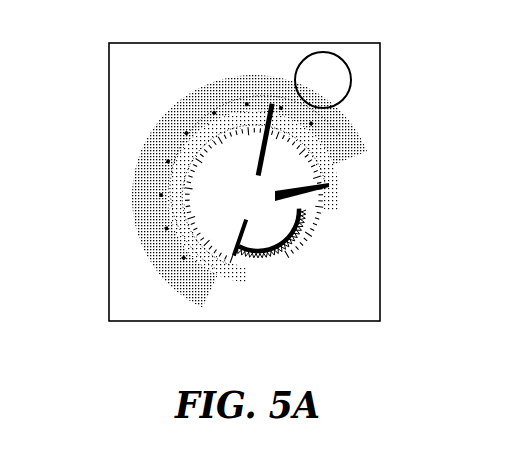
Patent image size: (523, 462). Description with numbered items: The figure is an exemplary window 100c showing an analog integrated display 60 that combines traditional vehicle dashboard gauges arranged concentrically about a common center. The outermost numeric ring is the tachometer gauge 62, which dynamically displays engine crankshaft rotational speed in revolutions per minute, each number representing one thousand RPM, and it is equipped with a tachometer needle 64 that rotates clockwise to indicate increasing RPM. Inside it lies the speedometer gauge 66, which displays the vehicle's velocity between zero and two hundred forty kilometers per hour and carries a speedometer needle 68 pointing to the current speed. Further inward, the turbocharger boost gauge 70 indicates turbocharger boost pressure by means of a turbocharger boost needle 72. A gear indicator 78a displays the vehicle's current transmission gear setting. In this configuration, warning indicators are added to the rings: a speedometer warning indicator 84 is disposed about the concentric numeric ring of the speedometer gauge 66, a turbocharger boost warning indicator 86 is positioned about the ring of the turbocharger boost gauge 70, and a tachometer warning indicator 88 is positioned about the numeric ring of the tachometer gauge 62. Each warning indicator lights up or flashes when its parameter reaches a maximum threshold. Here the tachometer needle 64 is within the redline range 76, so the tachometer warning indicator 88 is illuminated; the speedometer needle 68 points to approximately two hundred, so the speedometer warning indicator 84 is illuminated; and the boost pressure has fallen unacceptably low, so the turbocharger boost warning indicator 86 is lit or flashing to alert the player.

The window 100c is at (122, 349).
The analog integrated display 60 is at (158, 288).
The tachometer gauge 62 is at (158, 144).
The tachometer needle 64 is at (264, 80).
The speedometer gauge 66 is at (173, 205).
The speedometer needle 68 is at (307, 193).
The turbocharger boost gauge 70 is at (306, 235).
The turbocharger boost needle 72 is at (231, 242).
The redline range 76 is at (317, 118).
The gear indicator 78a is at (344, 61).
The speedometer warning indicator 84 is at (334, 178).
The turbocharger boost warning indicator 86 is at (278, 262).
The tachometer warning indicator 88 is at (202, 90).